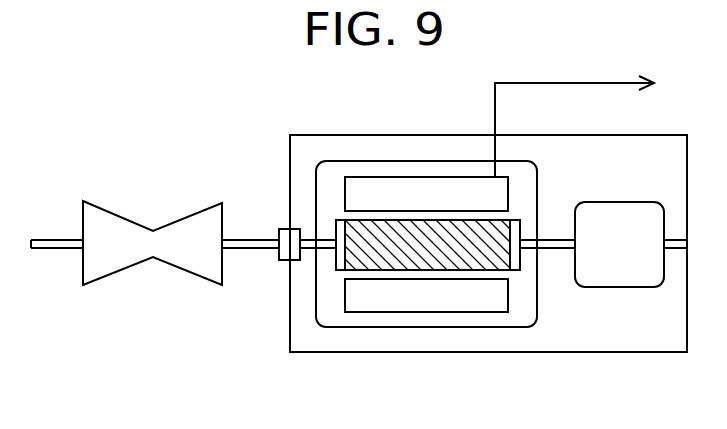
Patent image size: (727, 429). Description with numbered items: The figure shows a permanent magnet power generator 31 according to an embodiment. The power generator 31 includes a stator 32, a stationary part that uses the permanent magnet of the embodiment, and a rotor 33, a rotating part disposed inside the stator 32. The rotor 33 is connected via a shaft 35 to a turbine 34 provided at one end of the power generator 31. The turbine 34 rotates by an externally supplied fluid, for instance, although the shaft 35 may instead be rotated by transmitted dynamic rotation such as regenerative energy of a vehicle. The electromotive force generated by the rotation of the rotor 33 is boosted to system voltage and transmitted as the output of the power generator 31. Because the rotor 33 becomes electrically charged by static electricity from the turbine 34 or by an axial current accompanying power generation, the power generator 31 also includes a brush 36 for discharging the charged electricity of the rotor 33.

The power generator 31 is at (333, 134).
The stator 32 is at (398, 303).
The rotor 33 is at (440, 264).
The turbine 34 is at (192, 215).
The shaft 35 is at (254, 252).
The brush 36 is at (622, 288).